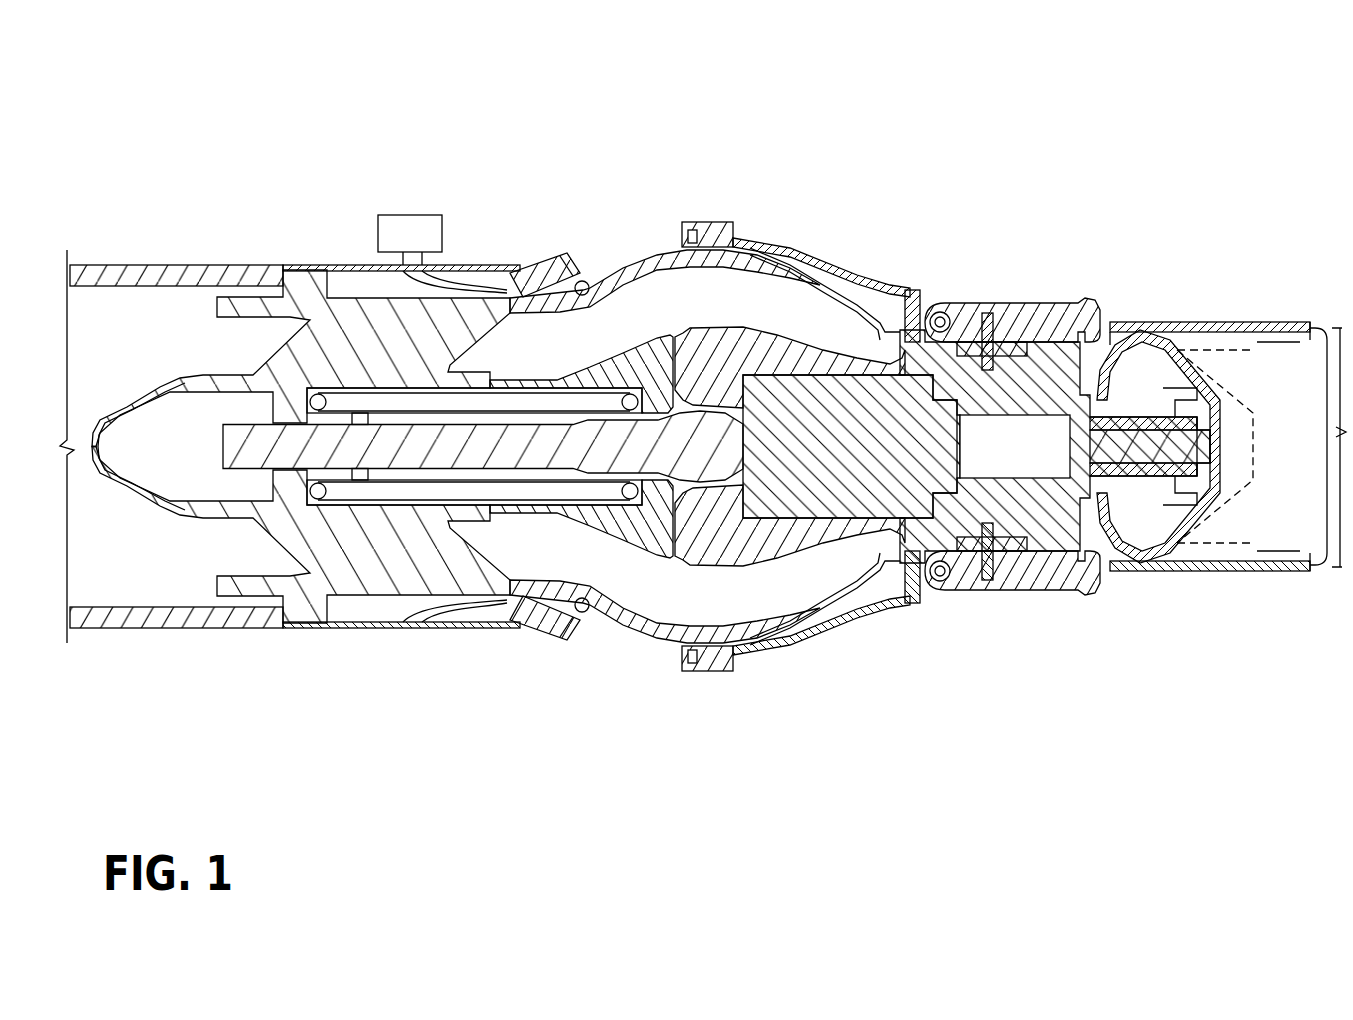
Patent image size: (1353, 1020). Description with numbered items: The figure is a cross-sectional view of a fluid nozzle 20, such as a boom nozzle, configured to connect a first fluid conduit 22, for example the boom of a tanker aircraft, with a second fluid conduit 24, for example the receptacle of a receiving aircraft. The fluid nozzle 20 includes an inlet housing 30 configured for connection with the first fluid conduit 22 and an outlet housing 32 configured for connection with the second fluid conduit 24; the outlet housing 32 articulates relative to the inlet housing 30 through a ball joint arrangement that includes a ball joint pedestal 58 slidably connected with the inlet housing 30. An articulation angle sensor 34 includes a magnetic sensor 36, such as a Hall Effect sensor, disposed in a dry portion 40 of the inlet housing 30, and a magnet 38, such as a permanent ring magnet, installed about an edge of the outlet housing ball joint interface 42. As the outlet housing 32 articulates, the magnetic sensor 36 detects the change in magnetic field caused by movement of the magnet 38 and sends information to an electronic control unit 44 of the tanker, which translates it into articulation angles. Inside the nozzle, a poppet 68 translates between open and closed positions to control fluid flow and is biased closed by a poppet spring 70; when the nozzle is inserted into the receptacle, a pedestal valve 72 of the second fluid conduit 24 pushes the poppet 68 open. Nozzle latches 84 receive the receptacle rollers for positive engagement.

The fluid nozzle 20 is at (1130, 130).
The first fluid conduit 22 is at (172, 265).
The second fluid conduit 24 is at (1330, 322).
The inlet housing 30 is at (285, 203).
The outlet housing 32 is at (1190, 298).
The articulation angle sensor 34 is at (645, 218).
The magnetic sensor 36 is at (557, 270).
The magnet 38 is at (703, 233).
The dry portion 40 is at (540, 263).
The outlet housing ball joint interface 42 is at (688, 218).
The electronic control unit 44 is at (405, 215).
The ball joint pedestal 58 is at (655, 545).
The poppet 68 is at (1143, 548).
The poppet spring 70 is at (1130, 390).
The pedestal valve 72 is at (1205, 522).
The nozzle latch 84 is at (1020, 320).